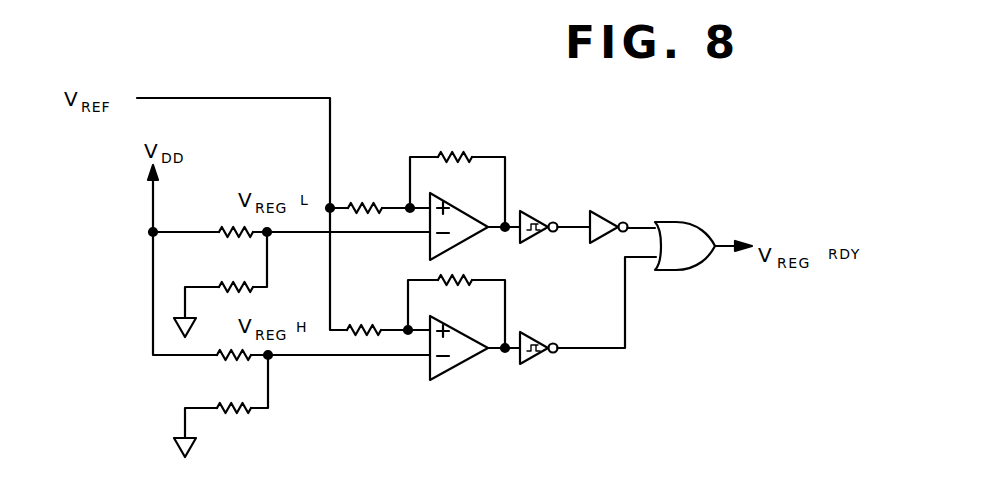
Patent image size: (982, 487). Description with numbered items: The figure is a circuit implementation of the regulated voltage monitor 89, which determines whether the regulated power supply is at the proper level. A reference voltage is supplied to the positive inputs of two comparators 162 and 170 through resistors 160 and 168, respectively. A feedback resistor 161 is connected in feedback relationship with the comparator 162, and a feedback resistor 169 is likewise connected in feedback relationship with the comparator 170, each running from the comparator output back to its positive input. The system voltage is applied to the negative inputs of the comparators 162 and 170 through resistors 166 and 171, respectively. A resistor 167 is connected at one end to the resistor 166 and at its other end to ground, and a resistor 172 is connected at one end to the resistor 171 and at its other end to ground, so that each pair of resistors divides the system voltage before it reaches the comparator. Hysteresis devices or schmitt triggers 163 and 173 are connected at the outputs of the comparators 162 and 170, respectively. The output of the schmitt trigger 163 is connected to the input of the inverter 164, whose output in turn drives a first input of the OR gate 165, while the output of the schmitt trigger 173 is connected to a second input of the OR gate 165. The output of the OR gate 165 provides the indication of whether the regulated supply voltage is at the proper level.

The regulated voltage monitor 89 is at (712, 380).
The resistor 160 is at (387, 168).
The feedback resistor 161 is at (460, 155).
The comparator 162 is at (465, 210).
The hysteresis device or schmitt trigger 163 is at (540, 236).
The inverter 164 is at (605, 215).
The OR gate 165 is at (700, 228).
The resistor 166 is at (232, 228).
The resistor 167 is at (240, 285).
The resistor 168 is at (362, 325).
The feedback resistor 169 is at (466, 268).
The comparator 170 is at (458, 364).
The resistor 171 is at (232, 358).
The resistor 172 is at (240, 413).
The hysteresis device or schmitt trigger 173 is at (535, 359).